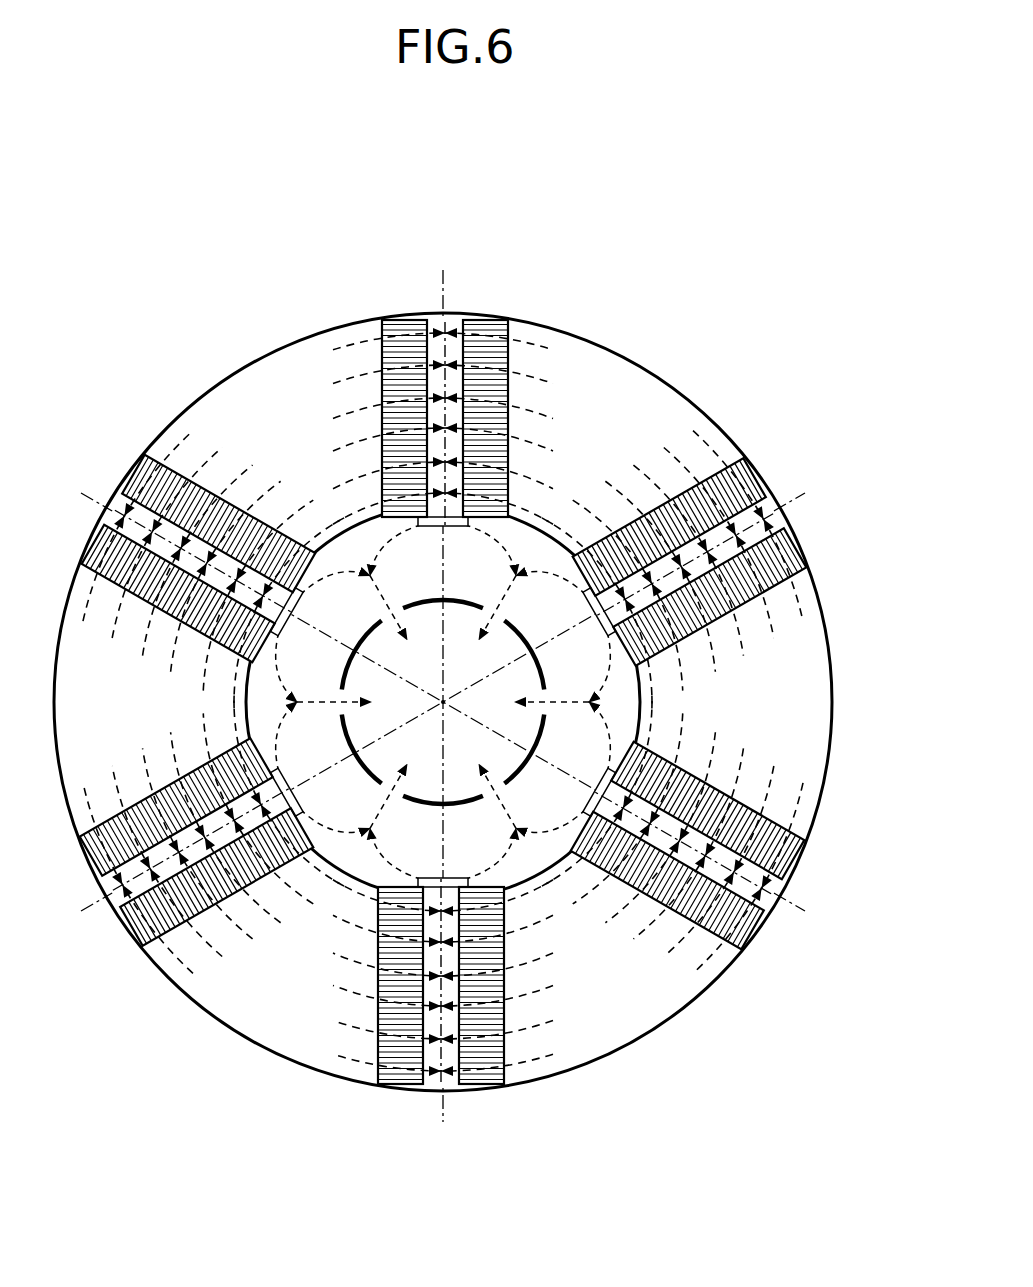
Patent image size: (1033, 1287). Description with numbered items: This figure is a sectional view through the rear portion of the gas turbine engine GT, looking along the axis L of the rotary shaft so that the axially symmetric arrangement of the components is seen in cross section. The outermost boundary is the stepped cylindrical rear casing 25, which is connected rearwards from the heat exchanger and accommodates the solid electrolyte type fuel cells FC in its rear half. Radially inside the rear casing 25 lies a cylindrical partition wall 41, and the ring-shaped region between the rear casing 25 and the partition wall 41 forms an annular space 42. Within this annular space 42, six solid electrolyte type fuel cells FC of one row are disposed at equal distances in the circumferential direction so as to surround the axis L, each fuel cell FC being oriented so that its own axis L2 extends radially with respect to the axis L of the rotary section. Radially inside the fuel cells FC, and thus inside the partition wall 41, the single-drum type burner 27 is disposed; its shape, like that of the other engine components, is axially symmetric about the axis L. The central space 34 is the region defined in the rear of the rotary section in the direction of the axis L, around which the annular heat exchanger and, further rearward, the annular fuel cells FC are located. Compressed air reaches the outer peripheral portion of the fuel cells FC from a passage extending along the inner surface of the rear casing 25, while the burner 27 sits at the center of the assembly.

The rear casing 25 is at (282, 354).
The cylindrical partition wall 41 is at (540, 532).
The annular space 42 is at (311, 456).
The space 34 is at (394, 564).
The burner 27 is at (459, 596).
The solid electrolyte type fuel cell FC is at (489, 318).
The gas turbine engine GT is at (676, 338).
The axis L is at (443, 702).
The axes of the fuel cells L2 is at (445, 634).